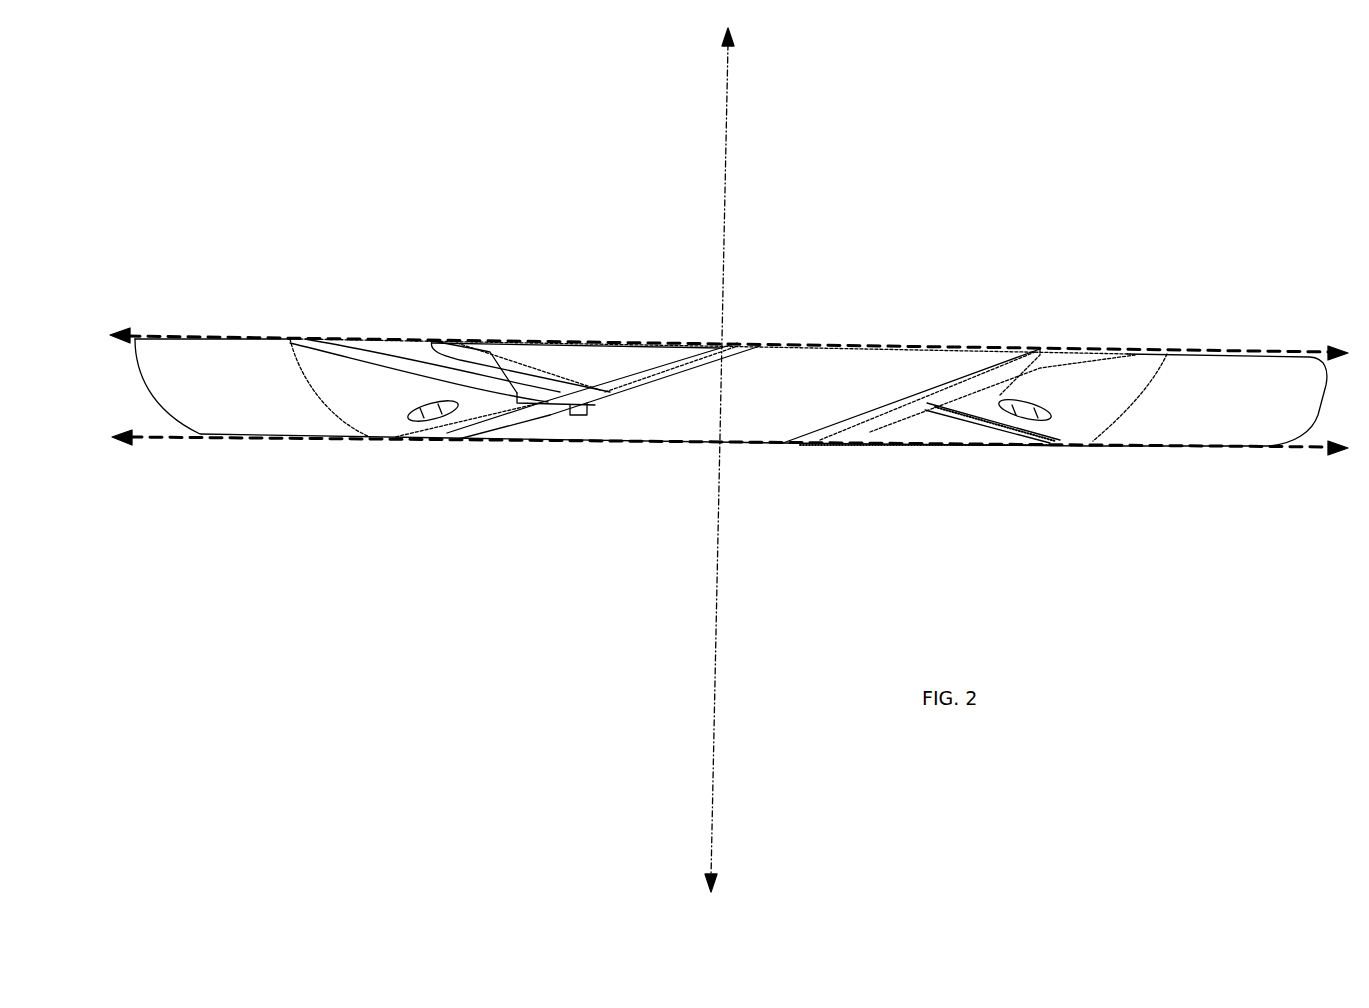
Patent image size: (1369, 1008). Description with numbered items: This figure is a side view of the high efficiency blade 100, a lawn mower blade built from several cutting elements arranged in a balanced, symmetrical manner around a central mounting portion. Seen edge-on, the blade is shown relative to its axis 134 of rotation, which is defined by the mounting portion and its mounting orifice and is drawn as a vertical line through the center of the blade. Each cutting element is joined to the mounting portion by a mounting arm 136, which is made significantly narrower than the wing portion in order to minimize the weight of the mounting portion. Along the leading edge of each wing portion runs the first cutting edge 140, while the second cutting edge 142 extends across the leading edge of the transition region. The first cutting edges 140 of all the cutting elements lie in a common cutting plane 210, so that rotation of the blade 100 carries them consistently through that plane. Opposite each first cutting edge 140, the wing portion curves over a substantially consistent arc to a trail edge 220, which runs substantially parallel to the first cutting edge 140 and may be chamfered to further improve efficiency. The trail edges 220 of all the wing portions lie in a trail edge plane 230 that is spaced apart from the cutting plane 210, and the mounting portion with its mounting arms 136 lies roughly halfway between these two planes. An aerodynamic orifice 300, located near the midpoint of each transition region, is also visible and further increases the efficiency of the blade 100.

The high efficiency blade 100 is at (366, 601).
The axis of rotation 134 is at (725, 228).
The mounting arm 136 is at (604, 393).
The first cutting edge 140 is at (447, 437).
The second cutting edge 142 is at (969, 406).
The cutting plane 210 is at (1313, 449).
The trail edge 220 is at (290, 338).
The trail edge plane 230 is at (1328, 350).
The aerodynamic orifice 300 is at (1025, 412).